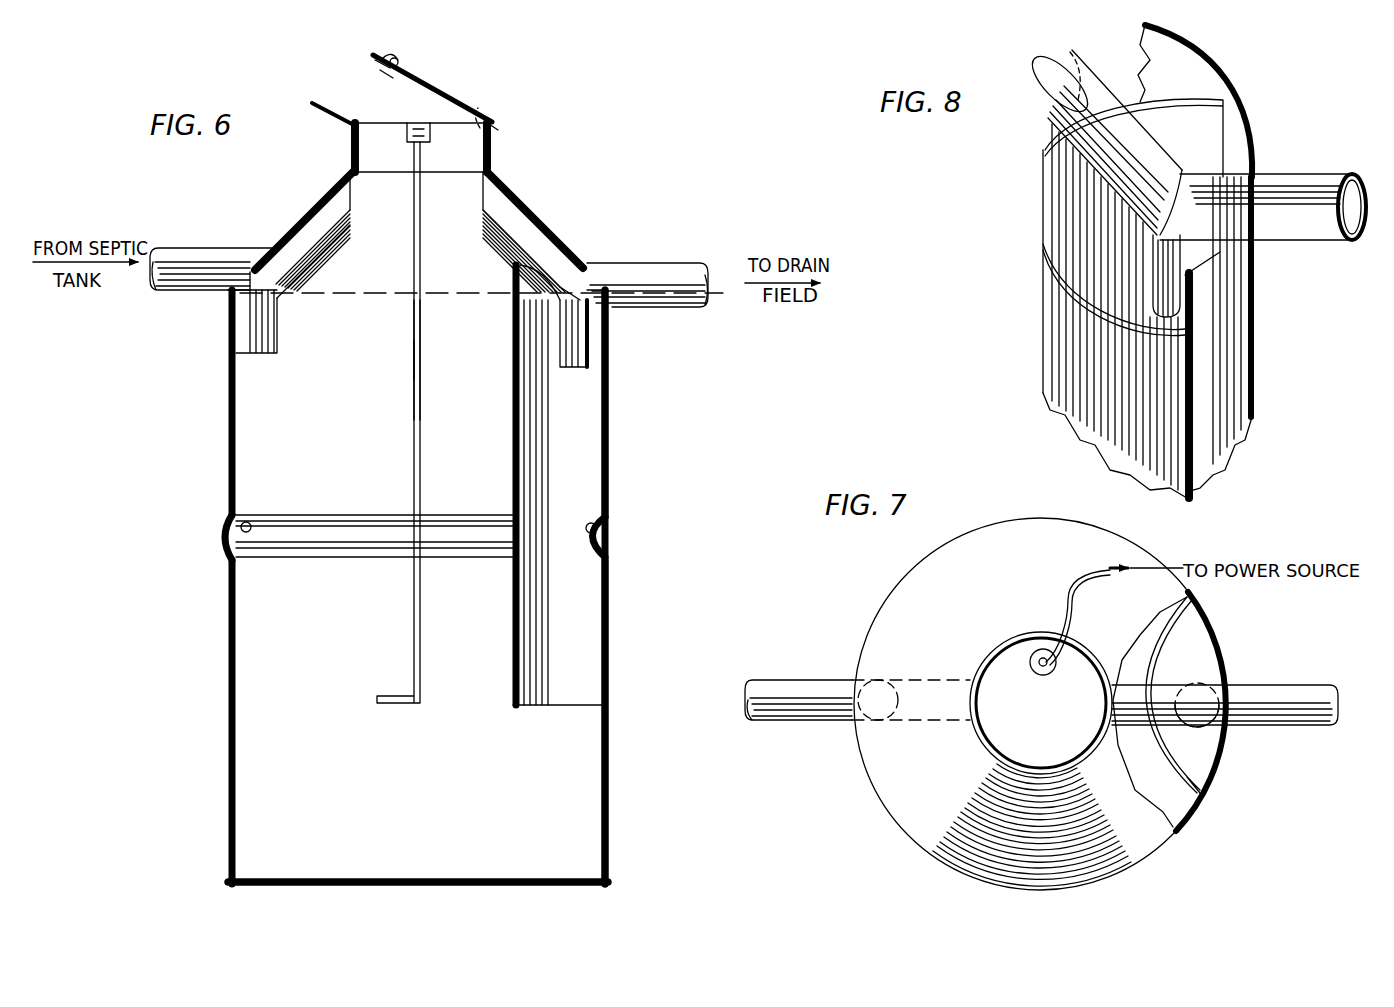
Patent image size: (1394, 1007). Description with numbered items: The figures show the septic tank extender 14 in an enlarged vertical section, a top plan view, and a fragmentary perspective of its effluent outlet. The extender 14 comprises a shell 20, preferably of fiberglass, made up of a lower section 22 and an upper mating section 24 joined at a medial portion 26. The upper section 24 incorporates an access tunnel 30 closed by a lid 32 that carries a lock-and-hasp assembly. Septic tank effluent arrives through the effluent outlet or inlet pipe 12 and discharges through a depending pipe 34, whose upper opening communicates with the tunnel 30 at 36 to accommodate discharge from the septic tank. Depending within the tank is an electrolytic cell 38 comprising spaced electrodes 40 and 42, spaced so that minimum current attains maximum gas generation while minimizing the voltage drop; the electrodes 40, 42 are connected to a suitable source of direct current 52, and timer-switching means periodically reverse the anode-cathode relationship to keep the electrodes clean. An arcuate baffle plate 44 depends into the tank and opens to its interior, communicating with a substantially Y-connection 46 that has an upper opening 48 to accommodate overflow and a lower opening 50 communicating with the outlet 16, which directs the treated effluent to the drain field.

In FIG. 6, the effluent outlet 12 is at (207, 247).
In FIG. 7, the effluent outlet 12 is at (795, 678).
In FIG. 6, the septic tank extender 14 is at (614, 493).
In FIG. 6, the outlet 16 is at (646, 262).
In FIG. 8, the outlet 16 is at (1310, 175).
In FIG. 7, the outlet 16 is at (1308, 684).
In FIG. 6, the shell 20 is at (614, 620).
In FIG. 6, the lower section 22 is at (610, 731).
In FIG. 6, the upper mating section 24 is at (610, 435).
In FIG. 8, the upper mating section 24 is at (1254, 393).
In FIG. 7, the upper mating section 24 is at (1197, 614).
In FIG. 6, the medial portion 26 is at (606, 540).
In FIG. 6, the access tunnel 30 is at (493, 160).
In FIG. 7, the access tunnel 30 is at (1013, 643).
In FIG. 6, the lid 32 is at (441, 95).
In FIG. 6, the depending pipe 34 is at (279, 331).
In FIG. 6, the upper opening 36 is at (358, 209).
In FIG. 6, the electrolytic cell 38 is at (424, 339).
In FIG. 7, the electrolytic cell 38 is at (1035, 679).
In FIG. 6, the electrode 40 is at (421, 372).
In FIG. 6, the electrode 42 is at (413, 362).
In FIG. 6, the arcuate baffle plate 44 is at (513, 428).
In FIG. 8, the arcuate baffle plate 44 is at (1043, 322).
In FIG. 7, the arcuate baffle plate 44 is at (1215, 771).
In FIG. 6, the Y-connection 46 is at (500, 253).
In FIG. 8, the Y-connection 46 is at (1060, 135).
In FIG. 7, the Y-connection 46 is at (1173, 683).
In FIG. 6, the upper opening 48 is at (483, 201).
In FIG. 8, the upper opening 48 is at (1045, 75).
In FIG. 6, the lower opening 50 is at (575, 369).
In FIG. 8, the lower opening 50 is at (1190, 318).
In FIG. 7, the lower opening 50 is at (1206, 698).
In FIG. 7, the source of direct current 52 is at (1084, 583).